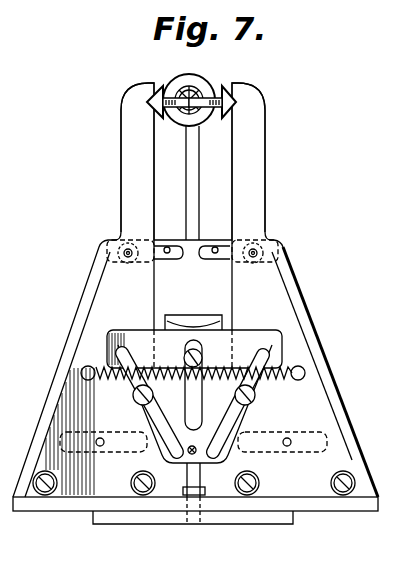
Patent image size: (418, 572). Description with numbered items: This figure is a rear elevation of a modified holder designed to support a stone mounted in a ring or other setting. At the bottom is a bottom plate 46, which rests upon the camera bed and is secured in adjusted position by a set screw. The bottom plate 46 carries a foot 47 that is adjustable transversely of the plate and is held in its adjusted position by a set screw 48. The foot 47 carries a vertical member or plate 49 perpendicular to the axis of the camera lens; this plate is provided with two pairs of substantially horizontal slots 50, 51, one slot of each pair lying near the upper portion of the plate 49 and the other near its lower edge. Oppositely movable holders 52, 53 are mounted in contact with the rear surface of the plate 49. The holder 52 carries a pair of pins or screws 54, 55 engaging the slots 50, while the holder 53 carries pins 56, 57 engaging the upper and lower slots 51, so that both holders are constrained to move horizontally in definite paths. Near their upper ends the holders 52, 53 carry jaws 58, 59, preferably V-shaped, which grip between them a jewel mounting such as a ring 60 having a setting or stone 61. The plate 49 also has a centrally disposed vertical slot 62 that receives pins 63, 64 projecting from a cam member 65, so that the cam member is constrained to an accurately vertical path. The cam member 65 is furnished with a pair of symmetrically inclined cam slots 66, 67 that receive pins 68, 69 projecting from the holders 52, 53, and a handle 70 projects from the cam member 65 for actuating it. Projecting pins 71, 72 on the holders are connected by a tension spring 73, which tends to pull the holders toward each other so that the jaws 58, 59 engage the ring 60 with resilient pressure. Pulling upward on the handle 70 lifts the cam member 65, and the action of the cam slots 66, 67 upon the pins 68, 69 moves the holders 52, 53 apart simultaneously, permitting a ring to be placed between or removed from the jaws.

The bottom plate 46 is at (128, 516).
The foot 47 is at (70, 505).
The set screw 48 is at (190, 496).
The vertical member or plate 49 is at (78, 330).
The pair of slots 50 is at (167, 247).
The pair of slots 51 is at (216, 247).
The holder 52 is at (127, 124).
The holder 53 is at (262, 134).
The pin or screw 54 is at (128, 253).
The pin or screw 55 is at (100, 438).
The pin 56 is at (258, 250).
The pin 57 is at (288, 438).
The jaw 58 is at (157, 90).
The jaw 59 is at (226, 90).
The ring 60 is at (168, 97).
The setting or stone 61 is at (192, 92).
The vertical slot 62 is at (190, 478).
The pin 63 is at (200, 355).
The pin 64 is at (197, 420).
The cam member 65 is at (244, 338).
The cam slot 66 is at (161, 418).
The cam slot 67 is at (240, 423).
The pin 68 is at (133, 396).
The pin 69 is at (256, 396).
The handle 70 is at (180, 317).
The projecting pin 71 is at (88, 366).
The projecting pin 72 is at (301, 367).
The tension spring 73 is at (243, 348).